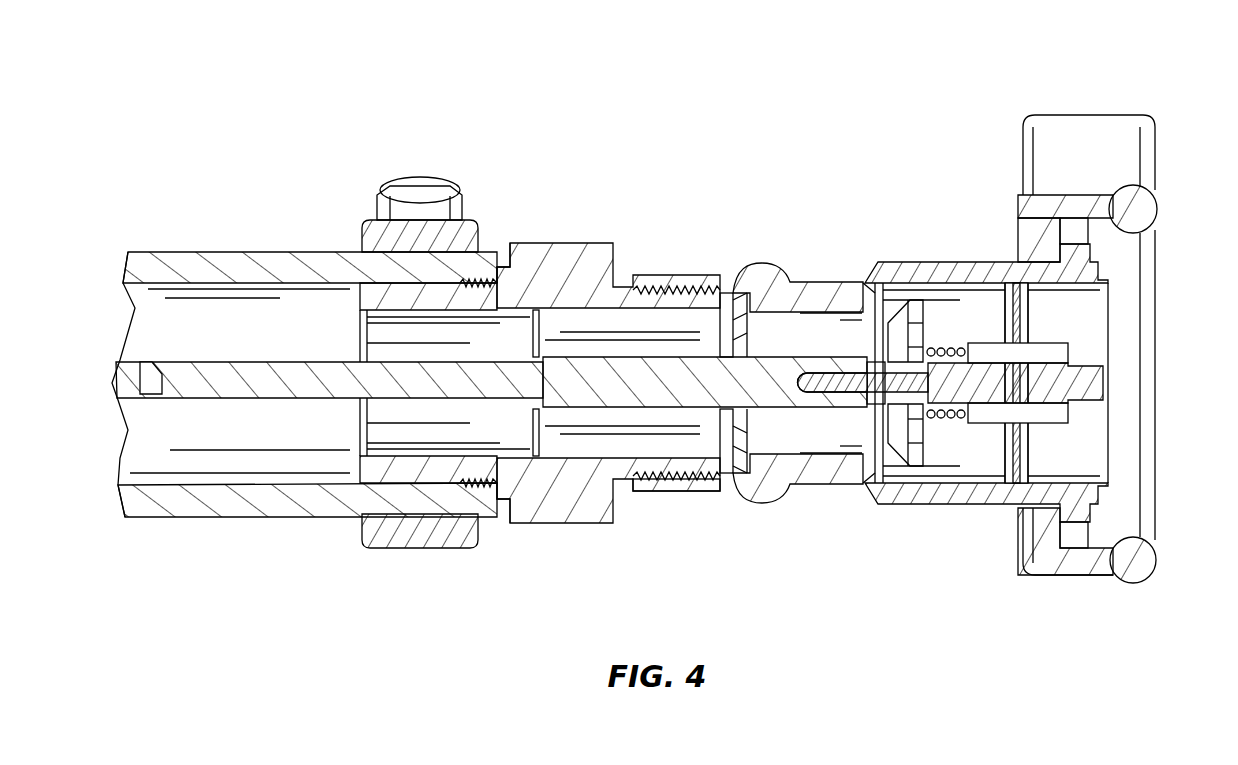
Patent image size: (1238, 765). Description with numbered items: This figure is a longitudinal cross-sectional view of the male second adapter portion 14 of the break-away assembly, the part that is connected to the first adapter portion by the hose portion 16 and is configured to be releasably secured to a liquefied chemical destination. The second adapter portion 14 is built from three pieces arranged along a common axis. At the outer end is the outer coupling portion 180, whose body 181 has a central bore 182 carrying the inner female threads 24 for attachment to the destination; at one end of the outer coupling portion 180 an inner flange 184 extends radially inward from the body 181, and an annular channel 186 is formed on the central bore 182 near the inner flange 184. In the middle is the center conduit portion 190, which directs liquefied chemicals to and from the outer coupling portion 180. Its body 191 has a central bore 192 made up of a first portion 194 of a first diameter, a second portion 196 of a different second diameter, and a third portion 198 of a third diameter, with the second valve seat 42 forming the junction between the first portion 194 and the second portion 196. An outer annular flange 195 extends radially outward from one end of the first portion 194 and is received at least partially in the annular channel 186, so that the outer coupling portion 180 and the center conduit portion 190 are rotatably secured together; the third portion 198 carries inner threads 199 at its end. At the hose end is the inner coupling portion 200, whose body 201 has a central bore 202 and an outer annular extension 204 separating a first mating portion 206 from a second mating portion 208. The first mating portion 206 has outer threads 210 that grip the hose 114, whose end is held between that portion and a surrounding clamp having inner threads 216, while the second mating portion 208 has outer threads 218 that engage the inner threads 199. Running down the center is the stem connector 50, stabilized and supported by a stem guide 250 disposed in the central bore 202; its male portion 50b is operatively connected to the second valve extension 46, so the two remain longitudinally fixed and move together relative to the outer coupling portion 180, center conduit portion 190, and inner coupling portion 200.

The second adapter portion 14 is at (736, 118).
The hose portion 16 is at (284, 182).
The inner female threads 24 is at (1130, 275).
The second valve seat 42 is at (888, 345).
The second valve extension 46 is at (1095, 395).
The stem connector 50 is at (272, 388).
The male portion of stem connector 50b is at (762, 368).
The hose 114 is at (244, 262).
The outer coupling portion 180 is at (1080, 198).
The body 181 is at (1033, 198).
The central bore 182 is at (1115, 250).
The inner flange 184 is at (1032, 235).
The annular channel 186 is at (1074, 537).
The center conduit portion 190 is at (868, 318).
The body 191 is at (884, 500).
The central bore 192 is at (960, 463).
The first portion 194 is at (978, 500).
The outer annular flange 195 is at (1040, 553).
The second portion 196 is at (815, 482).
The third portion 198 is at (710, 492).
The inner threads 199 is at (672, 470).
The inner coupling portion 200 is at (565, 262).
The body 201 is at (519, 246).
The central bore 202 is at (593, 338).
The outer annular extension 204 is at (553, 508).
The first mating portion 206 is at (412, 478).
The second mating portion 208 is at (645, 470).
The outer threads 210 is at (495, 278).
The inner threads 216 is at (362, 250).
The outer threads 218 is at (673, 280).
The stem guide 250 is at (530, 470).